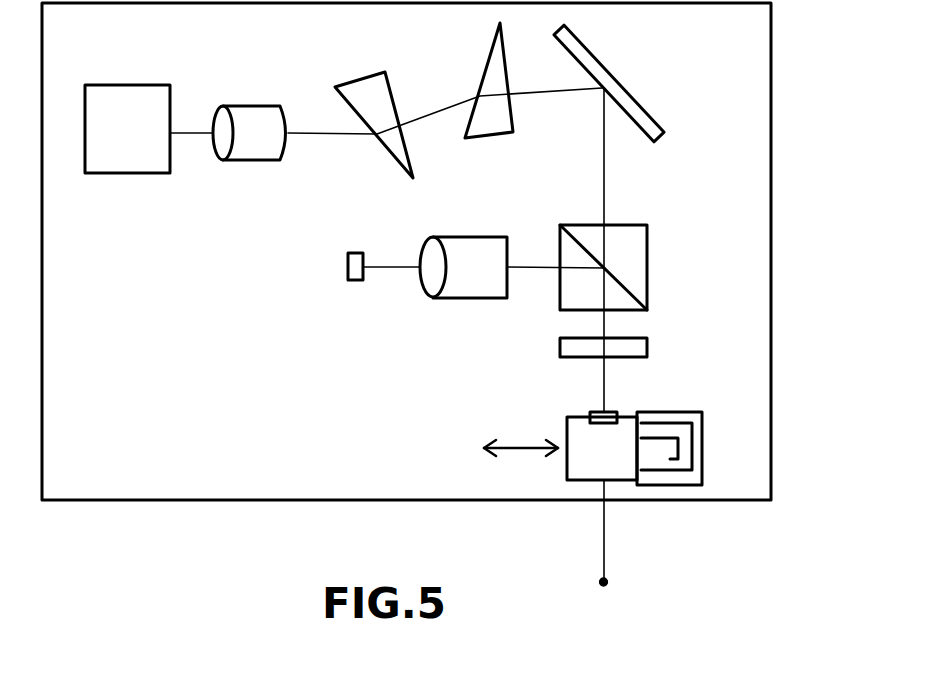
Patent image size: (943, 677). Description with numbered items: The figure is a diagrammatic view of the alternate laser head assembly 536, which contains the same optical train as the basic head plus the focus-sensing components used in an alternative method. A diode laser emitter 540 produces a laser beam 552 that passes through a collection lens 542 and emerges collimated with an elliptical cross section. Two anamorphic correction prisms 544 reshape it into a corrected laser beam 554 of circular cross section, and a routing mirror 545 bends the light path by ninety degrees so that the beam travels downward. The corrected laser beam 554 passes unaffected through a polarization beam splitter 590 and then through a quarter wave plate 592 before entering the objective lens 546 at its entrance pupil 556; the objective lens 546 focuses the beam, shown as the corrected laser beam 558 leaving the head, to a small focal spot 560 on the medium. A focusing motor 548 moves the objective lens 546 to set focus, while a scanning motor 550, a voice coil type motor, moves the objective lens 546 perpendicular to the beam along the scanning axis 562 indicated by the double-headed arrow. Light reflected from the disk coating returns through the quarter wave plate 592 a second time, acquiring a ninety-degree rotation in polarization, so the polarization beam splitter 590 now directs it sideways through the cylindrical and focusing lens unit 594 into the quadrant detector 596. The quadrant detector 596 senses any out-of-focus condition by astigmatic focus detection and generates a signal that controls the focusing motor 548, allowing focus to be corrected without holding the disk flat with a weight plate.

The alternate laser head assembly 536 is at (795, 88).
The diode laser emitter 540 is at (153, 143).
The collection lens 542 is at (261, 158).
The correction prisms 544 is at (364, 83).
The routing mirror 545 is at (640, 96).
The objective lens 546 is at (628, 458).
The focusing motor 548 is at (700, 424).
The scanning motor 550 is at (670, 459).
The laser beam 552 is at (188, 131).
The corrected laser beam 554 is at (574, 91).
The entrance pupil 556 is at (598, 411).
The corrected laser beam 558 is at (602, 537).
The focal spot 560 is at (608, 580).
The scanning axis 562 is at (524, 453).
The polarization beam splitter 590 is at (642, 253).
The quarter wave plate 592 is at (645, 348).
The cylindrical and focusing lens unit 594 is at (472, 288).
The quadrant detector 596 is at (353, 282).